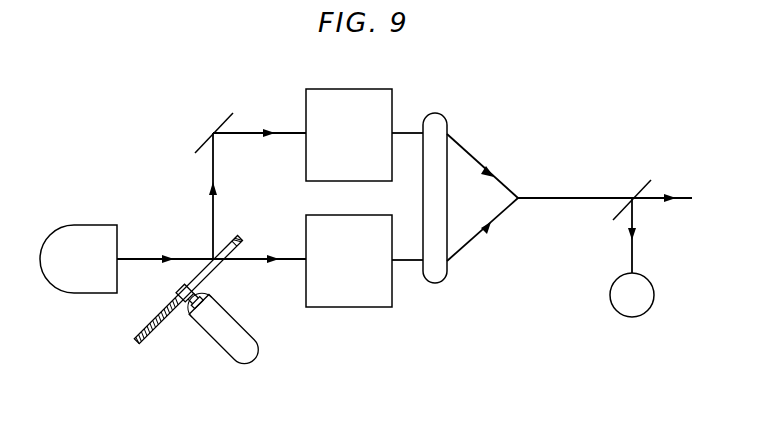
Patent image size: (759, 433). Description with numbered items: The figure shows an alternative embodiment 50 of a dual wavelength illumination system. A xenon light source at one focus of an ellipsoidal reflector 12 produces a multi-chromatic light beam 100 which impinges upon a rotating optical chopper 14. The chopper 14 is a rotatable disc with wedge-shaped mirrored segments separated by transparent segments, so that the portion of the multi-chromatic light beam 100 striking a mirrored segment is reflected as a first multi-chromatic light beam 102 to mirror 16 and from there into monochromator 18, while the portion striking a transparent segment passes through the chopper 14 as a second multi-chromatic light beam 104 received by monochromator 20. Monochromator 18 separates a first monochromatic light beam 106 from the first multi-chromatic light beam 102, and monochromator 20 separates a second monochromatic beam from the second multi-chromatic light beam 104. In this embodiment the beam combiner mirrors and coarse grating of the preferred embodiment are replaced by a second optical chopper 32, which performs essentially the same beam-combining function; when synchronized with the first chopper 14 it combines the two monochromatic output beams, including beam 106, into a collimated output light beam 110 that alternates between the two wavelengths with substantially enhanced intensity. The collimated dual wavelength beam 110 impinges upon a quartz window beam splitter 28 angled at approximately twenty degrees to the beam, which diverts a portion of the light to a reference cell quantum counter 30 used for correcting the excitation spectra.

The alternative embodiment 50 is at (258, 67).
The ellipsoidal reflector 12 is at (59, 224).
The multi-chromatic light beam 100 is at (144, 258).
The optical chopper 14 is at (138, 317).
The first multi-chromatic light beam 102 is at (211, 173).
The mirror 16 is at (229, 116).
The monochromator 18 is at (370, 89).
The monochromator 20 is at (361, 307).
The second multi-chromatic light beam 104 is at (284, 262).
The first monochromatic light beam 106 is at (412, 132).
The second optical chopper 32 is at (445, 282).
The collimated output light beam 110 is at (631, 255).
The beam splitter 28 is at (642, 186).
The reference cell quantum counter 30 is at (610, 288).